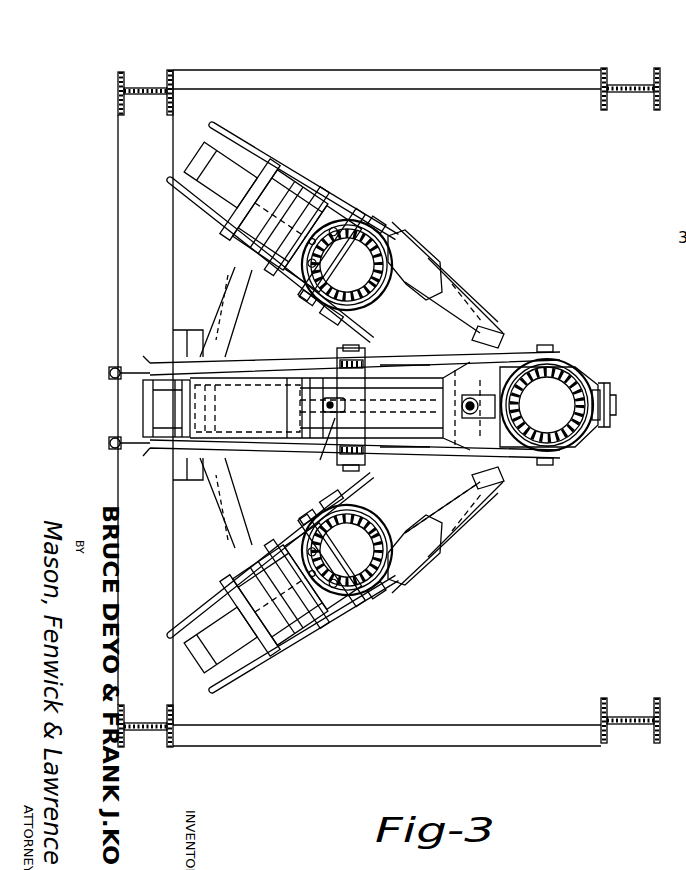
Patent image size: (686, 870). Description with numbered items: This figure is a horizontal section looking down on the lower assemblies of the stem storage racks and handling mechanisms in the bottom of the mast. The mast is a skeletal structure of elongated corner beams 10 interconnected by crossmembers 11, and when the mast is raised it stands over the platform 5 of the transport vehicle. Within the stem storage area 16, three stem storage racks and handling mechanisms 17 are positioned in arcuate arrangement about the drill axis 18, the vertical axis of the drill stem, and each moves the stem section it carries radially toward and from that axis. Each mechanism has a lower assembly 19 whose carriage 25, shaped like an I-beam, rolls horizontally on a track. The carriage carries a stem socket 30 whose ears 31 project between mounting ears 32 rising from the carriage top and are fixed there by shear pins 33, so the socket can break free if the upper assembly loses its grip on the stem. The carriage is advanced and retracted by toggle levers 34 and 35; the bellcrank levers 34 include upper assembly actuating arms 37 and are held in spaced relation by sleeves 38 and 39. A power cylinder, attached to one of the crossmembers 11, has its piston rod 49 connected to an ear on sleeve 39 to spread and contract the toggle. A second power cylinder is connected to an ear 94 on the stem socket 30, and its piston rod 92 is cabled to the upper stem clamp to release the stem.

The platform 5 is at (86, 470).
The corner beams 10 is at (140, 82).
The crossmembers 11 is at (405, 68).
The stem storage area 16 is at (477, 537).
The stem storage rack and handling mechanism 17 is at (373, 181).
The drill axis 18 is at (560, 382).
The lower assembly 19 is at (478, 291).
The carriage 25 is at (296, 302).
The stem socket 30 is at (386, 240).
The ears 31 is at (294, 277).
The mounting ears 32 is at (337, 185).
The shear pins 33 is at (604, 428).
The toggle levers 34 is at (185, 192).
The toggle levers 35 is at (262, 257).
The upper assembly actuating arms 37 is at (125, 368).
The sleeve 38 is at (158, 407).
The sleeve 39 is at (333, 420).
The piston rod 49 is at (322, 405).
The piston rod 92 is at (458, 340).
The ear 94 is at (472, 398).